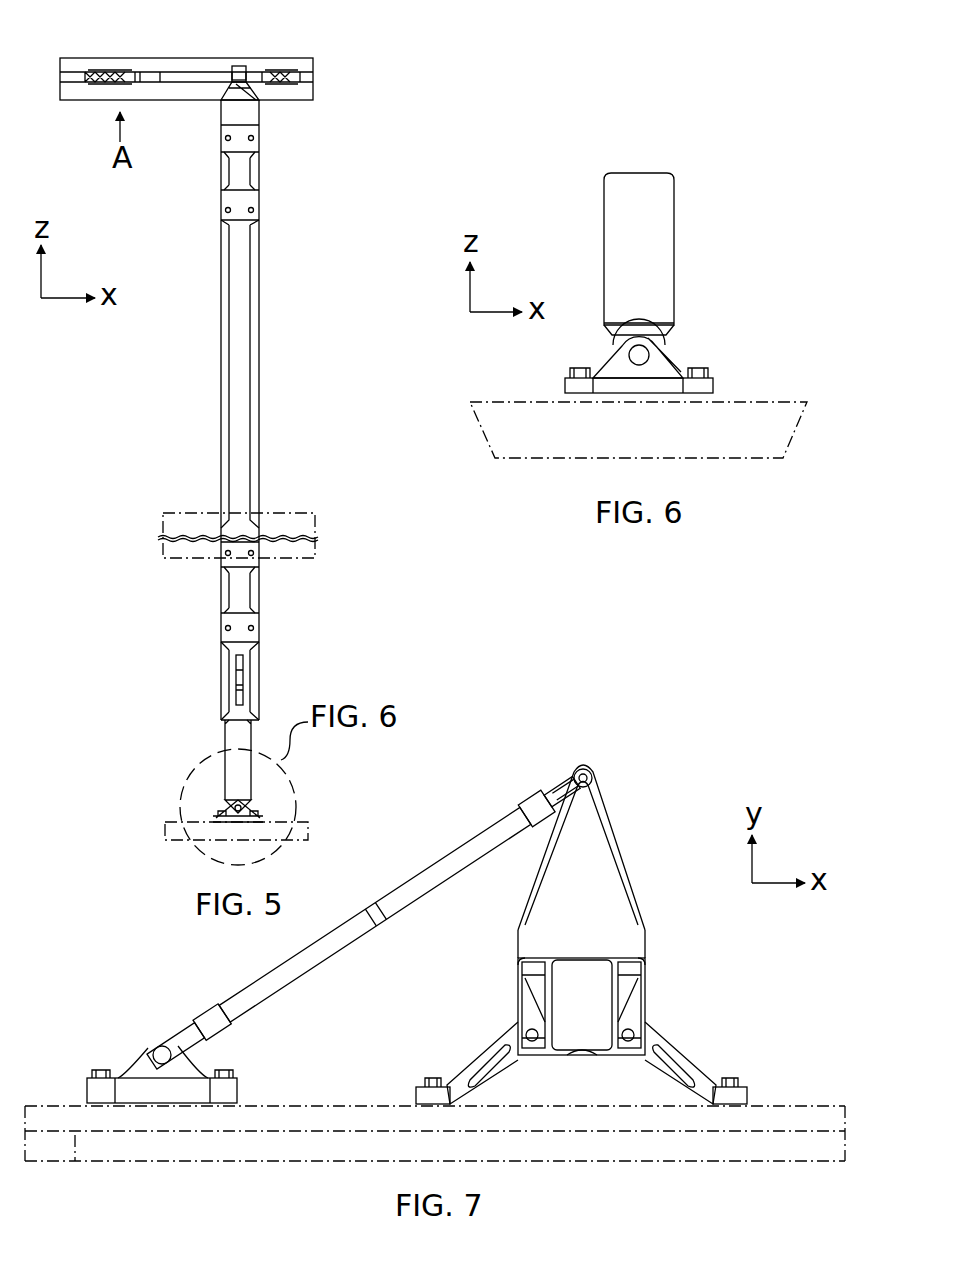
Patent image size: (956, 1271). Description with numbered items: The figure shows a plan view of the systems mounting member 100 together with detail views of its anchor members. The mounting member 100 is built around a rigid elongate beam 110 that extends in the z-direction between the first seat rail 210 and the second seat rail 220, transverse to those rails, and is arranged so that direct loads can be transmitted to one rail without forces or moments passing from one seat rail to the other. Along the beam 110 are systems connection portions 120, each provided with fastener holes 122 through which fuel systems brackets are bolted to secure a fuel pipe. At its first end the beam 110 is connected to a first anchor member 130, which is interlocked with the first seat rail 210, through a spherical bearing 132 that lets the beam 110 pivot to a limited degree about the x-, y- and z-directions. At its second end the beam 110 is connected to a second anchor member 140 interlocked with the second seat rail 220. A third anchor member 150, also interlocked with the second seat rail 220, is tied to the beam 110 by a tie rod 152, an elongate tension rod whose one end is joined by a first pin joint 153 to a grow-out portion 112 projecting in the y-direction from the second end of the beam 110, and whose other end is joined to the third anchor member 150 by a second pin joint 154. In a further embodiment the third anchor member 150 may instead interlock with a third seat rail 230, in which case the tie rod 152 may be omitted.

In FIG. 5, the mounting member 100 is at (318, 228).
In FIG. 5, the rigid elongate beam 110 is at (249, 318).
In FIG. 6, the rigid elongate beam 110 is at (660, 230).
In FIG. 7, the rigid elongate beam 110 is at (628, 985).
In FIG. 5, the grow-out portion 112 is at (244, 90).
In FIG. 7, the grow-out portion 112 is at (600, 860).
In FIG. 5, the systems connection portions 120 is at (253, 200).
In FIG. 5, the fastener holes 122 is at (226, 208).
In FIG. 6, the first anchor member 130 is at (668, 373).
In FIG. 6, the spherical bearing 132 is at (686, 340).
In FIG. 5, the second anchor member 140 is at (272, 75).
In FIG. 7, the second anchor member 140 is at (668, 1055).
In FIG. 5, the third anchor member 150 is at (120, 72).
In FIG. 7, the third anchor member 150 is at (125, 1060).
In FIG. 5, the tie rod 152 is at (181, 77).
In FIG. 7, the tie rod 152 is at (298, 976).
In FIG. 7, the first pin joint 153 is at (572, 762).
In FIG. 7, the second pin joint 154 is at (140, 1020).
In FIG. 5, the first seat rail 210 is at (302, 828).
In FIG. 6, the first seat rail 210 is at (788, 402).
In FIG. 5, the second seat rail 220 is at (291, 66).
In FIG. 7, the second seat rail 220 is at (790, 1110).
In FIG. 5, the third seat rail 230 is at (284, 526).